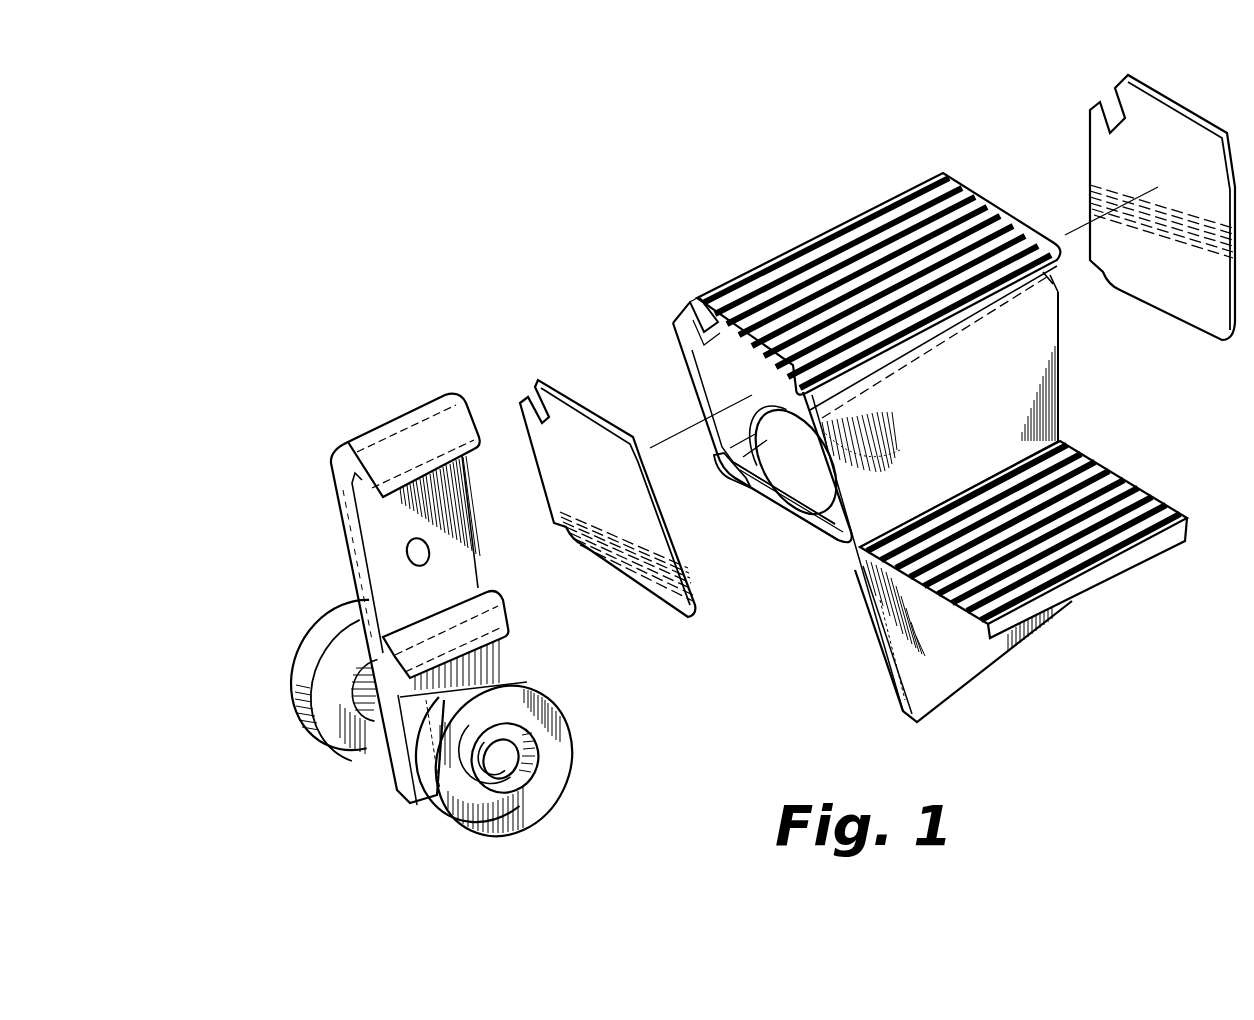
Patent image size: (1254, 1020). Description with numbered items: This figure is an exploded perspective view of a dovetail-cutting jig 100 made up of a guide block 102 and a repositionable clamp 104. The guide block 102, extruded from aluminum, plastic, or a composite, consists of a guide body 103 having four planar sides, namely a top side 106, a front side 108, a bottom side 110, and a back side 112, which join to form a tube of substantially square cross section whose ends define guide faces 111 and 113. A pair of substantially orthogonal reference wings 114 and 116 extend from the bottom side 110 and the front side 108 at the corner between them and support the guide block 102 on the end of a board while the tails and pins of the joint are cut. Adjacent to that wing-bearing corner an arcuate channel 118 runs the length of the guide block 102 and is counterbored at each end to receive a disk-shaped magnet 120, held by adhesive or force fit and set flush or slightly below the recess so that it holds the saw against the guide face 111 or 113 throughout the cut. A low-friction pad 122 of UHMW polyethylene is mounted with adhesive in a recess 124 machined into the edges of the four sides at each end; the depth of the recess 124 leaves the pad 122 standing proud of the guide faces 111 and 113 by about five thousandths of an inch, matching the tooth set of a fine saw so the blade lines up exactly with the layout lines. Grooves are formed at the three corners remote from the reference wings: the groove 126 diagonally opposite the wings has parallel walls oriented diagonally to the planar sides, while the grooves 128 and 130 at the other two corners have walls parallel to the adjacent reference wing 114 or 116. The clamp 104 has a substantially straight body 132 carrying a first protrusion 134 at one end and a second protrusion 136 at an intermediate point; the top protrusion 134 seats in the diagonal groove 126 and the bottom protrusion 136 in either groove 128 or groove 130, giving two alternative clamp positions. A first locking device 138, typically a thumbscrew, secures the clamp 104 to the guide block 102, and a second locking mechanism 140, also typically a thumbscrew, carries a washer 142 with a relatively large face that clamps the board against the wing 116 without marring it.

The jig 100 is at (462, 172).
The guide block 102 is at (757, 257).
The guide body 103 is at (912, 496).
The repositionable clamp 104 is at (406, 406).
The top side 106 is at (903, 198).
The front side 108 is at (1050, 354).
The bottom side 110 is at (790, 512).
The guide face 111 is at (800, 520).
The back side 112 is at (693, 350).
The guide face 113 is at (1068, 413).
The reference wing 114 is at (965, 685).
The reference wing 116 is at (1143, 552).
The arcuate channel 118 is at (790, 407).
The disk-shaped magnet 120 is at (811, 487).
The low-friction pad 122 is at (1183, 166).
The recess 124 is at (770, 490).
The groove 126 is at (680, 317).
The groove 128 is at (743, 487).
The groove 130 is at (1053, 277).
The body 132 is at (352, 525).
The first protrusion 134 is at (368, 442).
The second protrusion 136 is at (498, 628).
The first locking device 138 is at (410, 553).
The second locking mechanism 140 is at (302, 690).
The washer 142 is at (481, 815).